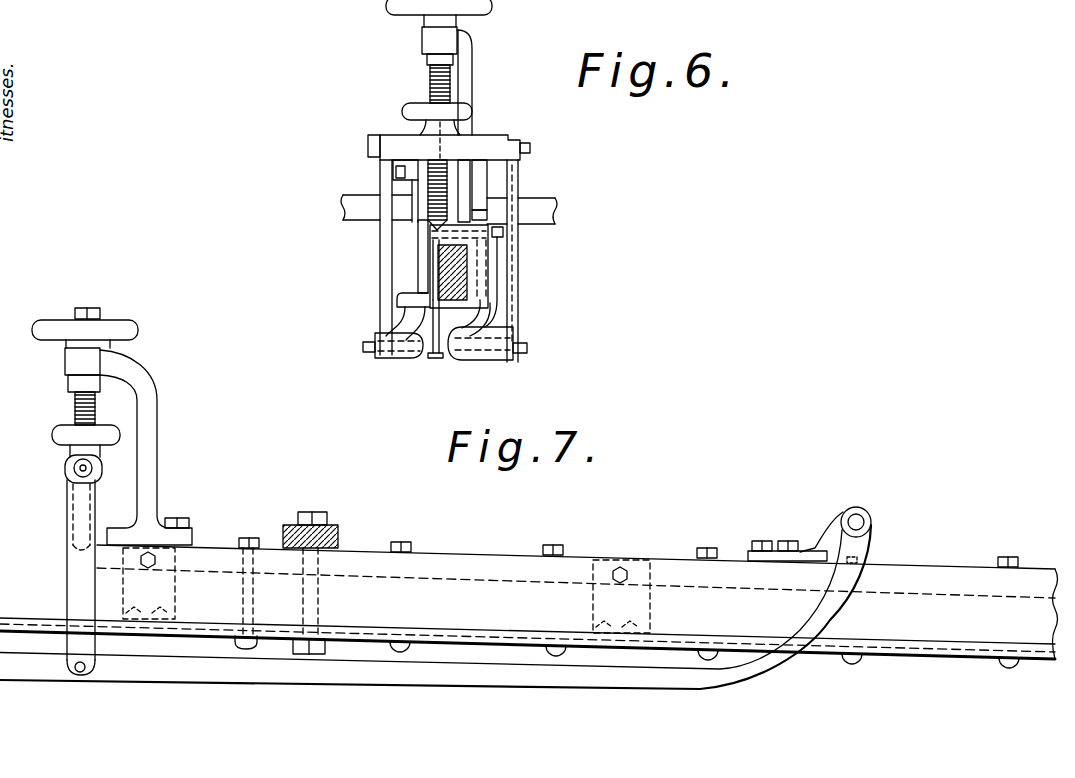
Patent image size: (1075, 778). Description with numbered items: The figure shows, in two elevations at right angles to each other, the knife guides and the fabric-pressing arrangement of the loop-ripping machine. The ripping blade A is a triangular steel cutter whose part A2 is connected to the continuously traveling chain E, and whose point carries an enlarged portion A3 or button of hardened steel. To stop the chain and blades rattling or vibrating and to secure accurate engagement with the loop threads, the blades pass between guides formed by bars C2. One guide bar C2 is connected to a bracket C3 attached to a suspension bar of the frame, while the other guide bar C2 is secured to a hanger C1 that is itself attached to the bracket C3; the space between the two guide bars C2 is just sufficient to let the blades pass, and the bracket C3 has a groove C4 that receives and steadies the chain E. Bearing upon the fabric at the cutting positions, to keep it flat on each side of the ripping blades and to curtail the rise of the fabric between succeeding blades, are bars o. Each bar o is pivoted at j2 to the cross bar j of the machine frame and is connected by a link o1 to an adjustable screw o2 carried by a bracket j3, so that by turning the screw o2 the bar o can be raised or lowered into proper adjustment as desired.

In FIG. 6, the cross bar j is at (543, 216).
In FIG. 7, the cross bar j is at (340, 530).
In FIG. 6, the pivot j2 is at (477, 177).
In FIG. 7, the pivot j2 is at (873, 512).
In FIG. 6, the bracket j3 is at (472, 90).
In FIG. 7, the bracket j3 is at (144, 418).
In FIG. 6, the bar o is at (418, 248).
In FIG. 7, the bar o is at (335, 673).
In FIG. 6, the link o1 is at (385, 185).
In FIG. 7, the link o1 is at (82, 515).
In FIG. 6, the adjustable screw o2 is at (430, 85).
In FIG. 7, the adjustable screw o2 is at (78, 406).
In FIG. 6, the hanger C1 is at (425, 255).
In FIG. 7, the hanger C1 is at (163, 595).
In FIG. 6, the guide bar C2 is at (440, 302).
In FIG. 7, the guide bar C2 is at (497, 634).
In FIG. 6, the bracket C3 is at (465, 234).
In FIG. 7, the bracket C3 is at (452, 590).
In FIG. 6, the groove C4 is at (468, 273).
In FIG. 6, the chain E is at (470, 281).
In FIG. 6, the ripping blade A is at (450, 313).
In FIG. 6, the connecting part A2 is at (437, 263).
In FIG. 6, the enlarged portion A3 is at (437, 357).